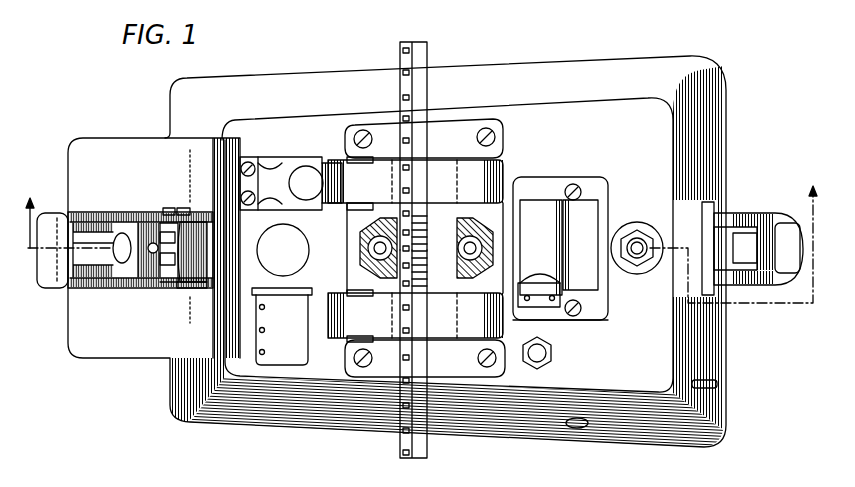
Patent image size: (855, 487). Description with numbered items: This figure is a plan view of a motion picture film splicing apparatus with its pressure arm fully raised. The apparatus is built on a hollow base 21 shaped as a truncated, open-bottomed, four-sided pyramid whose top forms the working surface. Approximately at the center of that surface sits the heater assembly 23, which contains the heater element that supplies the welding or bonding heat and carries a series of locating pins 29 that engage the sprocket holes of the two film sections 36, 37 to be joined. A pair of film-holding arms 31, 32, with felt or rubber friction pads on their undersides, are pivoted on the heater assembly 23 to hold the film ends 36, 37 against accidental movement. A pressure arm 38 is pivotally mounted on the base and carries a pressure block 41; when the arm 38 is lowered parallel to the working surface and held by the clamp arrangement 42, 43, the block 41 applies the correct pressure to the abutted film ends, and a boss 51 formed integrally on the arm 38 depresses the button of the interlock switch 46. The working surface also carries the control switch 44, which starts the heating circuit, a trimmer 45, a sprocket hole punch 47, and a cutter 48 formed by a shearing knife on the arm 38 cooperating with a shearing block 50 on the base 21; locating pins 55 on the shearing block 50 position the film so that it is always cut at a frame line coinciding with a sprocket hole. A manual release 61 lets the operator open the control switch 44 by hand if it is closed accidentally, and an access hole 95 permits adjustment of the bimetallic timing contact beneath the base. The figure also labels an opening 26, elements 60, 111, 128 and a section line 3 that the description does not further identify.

The hollow base 21 is at (573, 58).
The heater assembly 23 is at (457, 118).
The opening 26 is at (258, 257).
The locating pins 29 is at (408, 330).
The film-holding arm 31 is at (505, 328).
The film-holding arm 32 is at (505, 166).
The film section 36 is at (428, 452).
The film section 37 is at (430, 43).
The pressure arm 38 is at (66, 289).
The pressure block 41 is at (155, 213).
The clamp arrangement 42 is at (767, 215).
The clamp arrangement 43 is at (750, 287).
The control switch 44 is at (550, 365).
The trimmer 45 is at (552, 171).
The interlock switch 46 is at (631, 240).
The sprocket hole punch 47 is at (283, 146).
The cutter 48 is at (292, 367).
The shearing block 50 is at (290, 292).
The boss 51 is at (167, 289).
The locating pins 55 is at (266, 352).
The nuts 60 is at (183, 208).
The manual release 61 is at (718, 382).
The access hole 95 is at (577, 430).
The bosses 111 is at (468, 237).
The mounting plate 128 is at (500, 127).
The section line 3- 3 is at (422, 232).